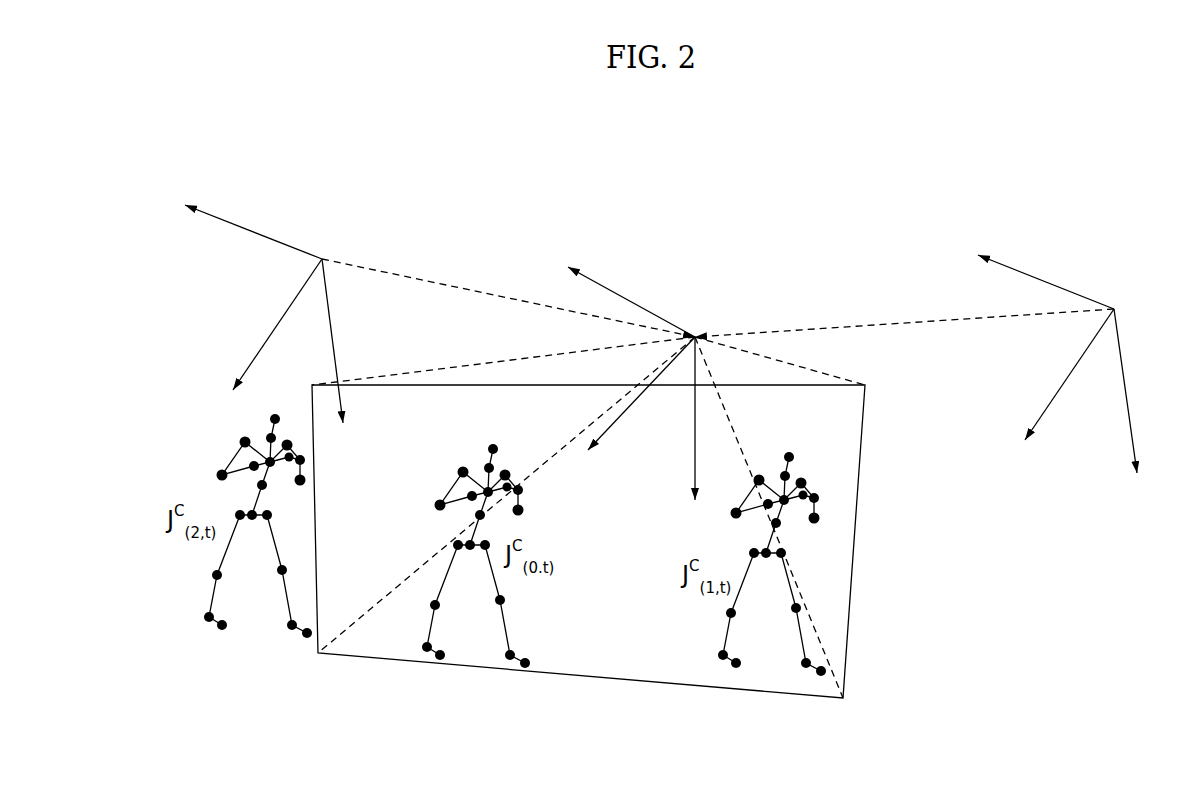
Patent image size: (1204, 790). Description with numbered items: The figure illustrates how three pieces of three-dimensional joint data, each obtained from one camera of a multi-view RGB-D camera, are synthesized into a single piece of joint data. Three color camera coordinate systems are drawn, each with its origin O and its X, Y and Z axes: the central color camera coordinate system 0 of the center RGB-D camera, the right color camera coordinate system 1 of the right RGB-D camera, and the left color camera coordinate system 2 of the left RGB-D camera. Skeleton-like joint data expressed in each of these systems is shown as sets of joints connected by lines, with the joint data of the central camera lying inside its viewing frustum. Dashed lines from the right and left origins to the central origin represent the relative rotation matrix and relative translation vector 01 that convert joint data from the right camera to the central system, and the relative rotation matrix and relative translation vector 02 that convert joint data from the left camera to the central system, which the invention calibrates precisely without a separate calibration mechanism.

The central color camera coordinate system 0 is at (646, 386).
The right color camera coordinate system 1 is at (1078, 361).
The left color camera coordinate system 2 is at (286, 311).
The relative rotation matrix and relative translation vector from right to central c 01 is at (904, 335).
The relative rotation matrix and relative translation vector from left to central co 02 is at (508, 298).